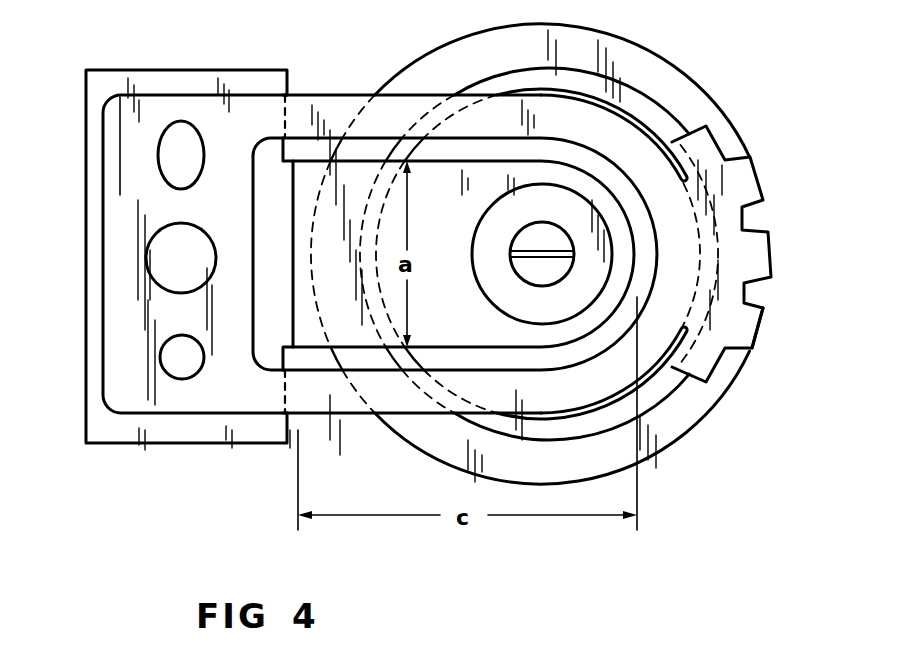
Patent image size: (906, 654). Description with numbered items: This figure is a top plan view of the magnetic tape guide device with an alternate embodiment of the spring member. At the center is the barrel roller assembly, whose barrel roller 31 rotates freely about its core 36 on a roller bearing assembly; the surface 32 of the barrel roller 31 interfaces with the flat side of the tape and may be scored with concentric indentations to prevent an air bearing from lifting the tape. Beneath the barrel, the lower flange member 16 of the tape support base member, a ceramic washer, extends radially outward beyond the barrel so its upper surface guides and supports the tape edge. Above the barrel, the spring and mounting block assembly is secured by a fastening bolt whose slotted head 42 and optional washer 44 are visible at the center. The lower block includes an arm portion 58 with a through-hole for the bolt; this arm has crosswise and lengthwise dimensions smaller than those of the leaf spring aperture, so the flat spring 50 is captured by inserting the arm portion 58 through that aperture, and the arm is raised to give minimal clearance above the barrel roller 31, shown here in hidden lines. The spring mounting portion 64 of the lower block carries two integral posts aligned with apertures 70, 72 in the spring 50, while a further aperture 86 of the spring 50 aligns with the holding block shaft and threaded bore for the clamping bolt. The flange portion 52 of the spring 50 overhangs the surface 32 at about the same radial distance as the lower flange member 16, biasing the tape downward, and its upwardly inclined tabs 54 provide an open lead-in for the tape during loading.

The lower flange member 16 is at (683, 438).
The barrel roller 31 is at (610, 95).
The surface of the guide barrel roller 32 is at (650, 100).
The core 36 is at (660, 372).
The slotted head 42 is at (527, 232).
The washer 44 is at (488, 238).
The flat spring 50 is at (330, 93).
The flange portion 52 is at (735, 249).
The upwardly inclined tabs 54 is at (762, 338).
The arm portion 58 is at (472, 320).
The spring mounting portion 64 is at (182, 68).
The aperture 70 is at (178, 352).
The aperture 72 is at (175, 157).
The aperture of leaf spring 86 is at (166, 262).